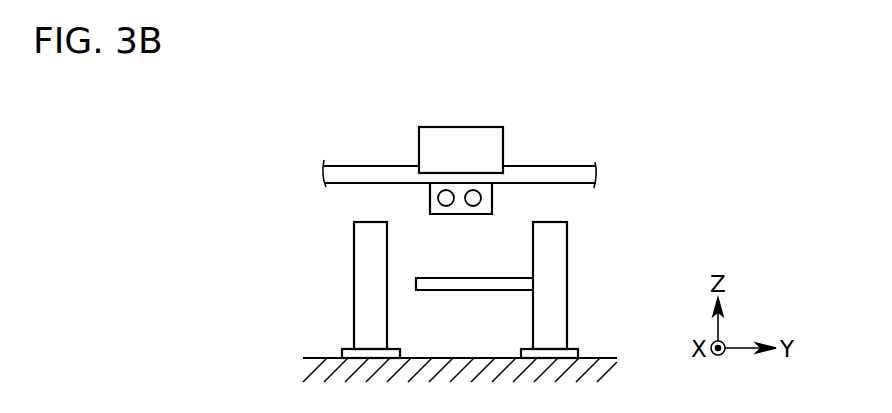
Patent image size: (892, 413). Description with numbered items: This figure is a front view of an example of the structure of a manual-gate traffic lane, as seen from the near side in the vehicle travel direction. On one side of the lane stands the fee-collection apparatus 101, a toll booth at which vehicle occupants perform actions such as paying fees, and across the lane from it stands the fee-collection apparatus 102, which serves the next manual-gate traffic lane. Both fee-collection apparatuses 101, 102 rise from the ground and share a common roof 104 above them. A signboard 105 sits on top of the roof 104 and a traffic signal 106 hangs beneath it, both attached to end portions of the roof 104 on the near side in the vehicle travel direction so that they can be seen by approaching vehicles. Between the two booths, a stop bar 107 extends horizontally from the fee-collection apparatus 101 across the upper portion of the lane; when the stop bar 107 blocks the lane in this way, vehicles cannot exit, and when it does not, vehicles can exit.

The fee-collection apparatus 101 is at (563, 268).
The fee-collection apparatus 102 is at (359, 267).
The roof 104 is at (558, 174).
The signboard 105 is at (496, 146).
The traffic signal 106 is at (493, 197).
The stop bar 107 is at (478, 287).